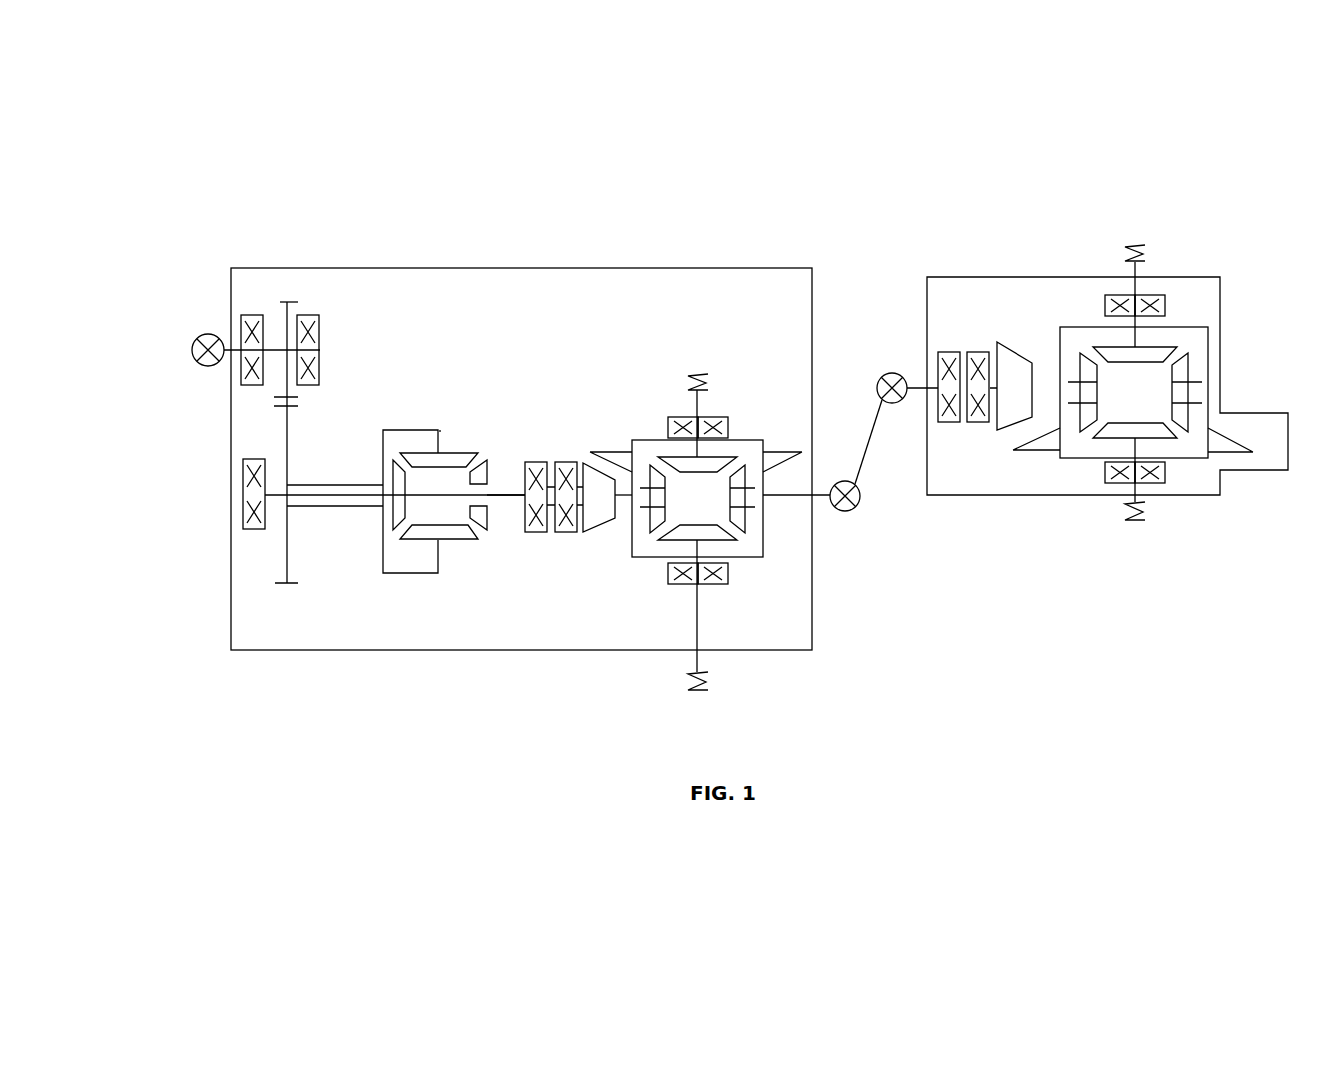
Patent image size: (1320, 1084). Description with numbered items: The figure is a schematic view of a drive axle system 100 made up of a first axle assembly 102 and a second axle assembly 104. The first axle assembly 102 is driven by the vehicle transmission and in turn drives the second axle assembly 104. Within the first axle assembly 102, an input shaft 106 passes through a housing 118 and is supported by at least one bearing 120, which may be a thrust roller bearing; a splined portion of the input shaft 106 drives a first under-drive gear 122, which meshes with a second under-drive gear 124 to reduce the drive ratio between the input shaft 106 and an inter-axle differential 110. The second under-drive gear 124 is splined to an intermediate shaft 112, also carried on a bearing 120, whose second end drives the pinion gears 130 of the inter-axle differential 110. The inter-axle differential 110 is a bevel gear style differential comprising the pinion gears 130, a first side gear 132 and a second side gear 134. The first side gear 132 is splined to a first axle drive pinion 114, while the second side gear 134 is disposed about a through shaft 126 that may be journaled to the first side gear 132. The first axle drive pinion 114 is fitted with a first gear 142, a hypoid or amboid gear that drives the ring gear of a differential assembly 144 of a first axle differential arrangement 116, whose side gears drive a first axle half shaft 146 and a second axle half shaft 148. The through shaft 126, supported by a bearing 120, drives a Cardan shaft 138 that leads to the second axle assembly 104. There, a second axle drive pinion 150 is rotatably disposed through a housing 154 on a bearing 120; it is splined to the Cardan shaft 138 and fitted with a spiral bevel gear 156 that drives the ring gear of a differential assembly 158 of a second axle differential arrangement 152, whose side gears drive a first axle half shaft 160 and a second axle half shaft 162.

The drive axle system 100 is at (790, 131).
The first axle assembly 102 is at (638, 265).
The second axle assembly 104 is at (956, 274).
The input shaft 106 is at (228, 360).
The inter-axle differential 110 is at (429, 586).
The intermediate shaft 112 is at (300, 485).
The first axle drive pinion 114 is at (520, 505).
The first axle differential arrangement 116 is at (763, 634).
The housing 118 is at (813, 632).
The bearing 120 is at (252, 385).
The first under-drive gear 122 is at (280, 302).
The second under-drive gear 124 is at (287, 560).
The through shaft 126 is at (370, 500).
The pinion gears 130 is at (455, 452).
The first side gear 132 is at (490, 466).
The second side gear 134 is at (396, 532).
The Cardan shaft 138 is at (868, 445).
The first gear 142 is at (600, 533).
The differential assembly 144 is at (770, 553).
The first axle half shaft 146 is at (695, 670).
The second axle half shaft 148 is at (697, 397).
The second axle drive pinion 150 is at (905, 378).
The second axle differential arrangement 152 is at (1053, 296).
The housing 154 is at (1007, 497).
The spiral bevel gear 156 is at (1012, 345).
The differential assembly 158 is at (1214, 345).
The first axle half shaft 160 is at (1145, 505).
The second axle half shaft 162 is at (1150, 258).